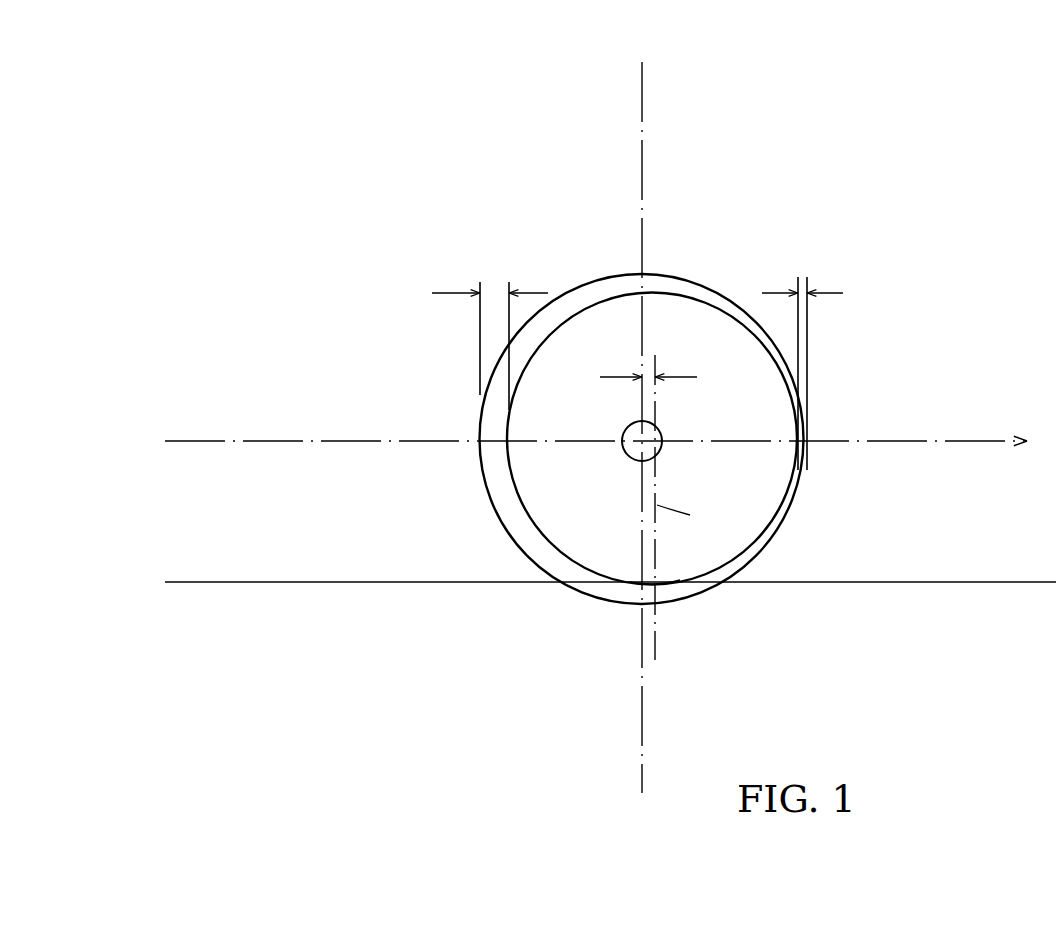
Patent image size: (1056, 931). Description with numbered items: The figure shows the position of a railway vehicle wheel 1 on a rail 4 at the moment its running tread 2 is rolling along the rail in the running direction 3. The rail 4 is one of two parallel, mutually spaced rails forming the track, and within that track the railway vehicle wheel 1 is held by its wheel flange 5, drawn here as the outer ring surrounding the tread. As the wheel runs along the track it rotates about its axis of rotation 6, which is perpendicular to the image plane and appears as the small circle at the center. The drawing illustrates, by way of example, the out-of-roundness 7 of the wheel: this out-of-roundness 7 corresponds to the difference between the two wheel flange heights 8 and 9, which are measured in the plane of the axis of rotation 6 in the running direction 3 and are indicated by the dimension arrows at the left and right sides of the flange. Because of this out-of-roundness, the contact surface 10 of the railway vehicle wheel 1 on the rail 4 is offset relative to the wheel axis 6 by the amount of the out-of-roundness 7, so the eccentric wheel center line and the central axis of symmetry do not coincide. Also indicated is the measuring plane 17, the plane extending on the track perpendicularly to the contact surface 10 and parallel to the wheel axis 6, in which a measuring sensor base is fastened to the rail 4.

The railway vehicle wheel 1 is at (646, 369).
The running tread 2 is at (665, 292).
The direction 3 is at (596, 421).
The rail 4 is at (980, 582).
The wheel flange 5 is at (582, 283).
The axis of rotation 6 is at (628, 453).
The out-of-roundness 7 is at (648, 497).
The wheel flange height 8 is at (490, 341).
The wheel flange height 9 is at (806, 366).
The contact surface 10 is at (657, 583).
The measuring plane 17 is at (657, 505).